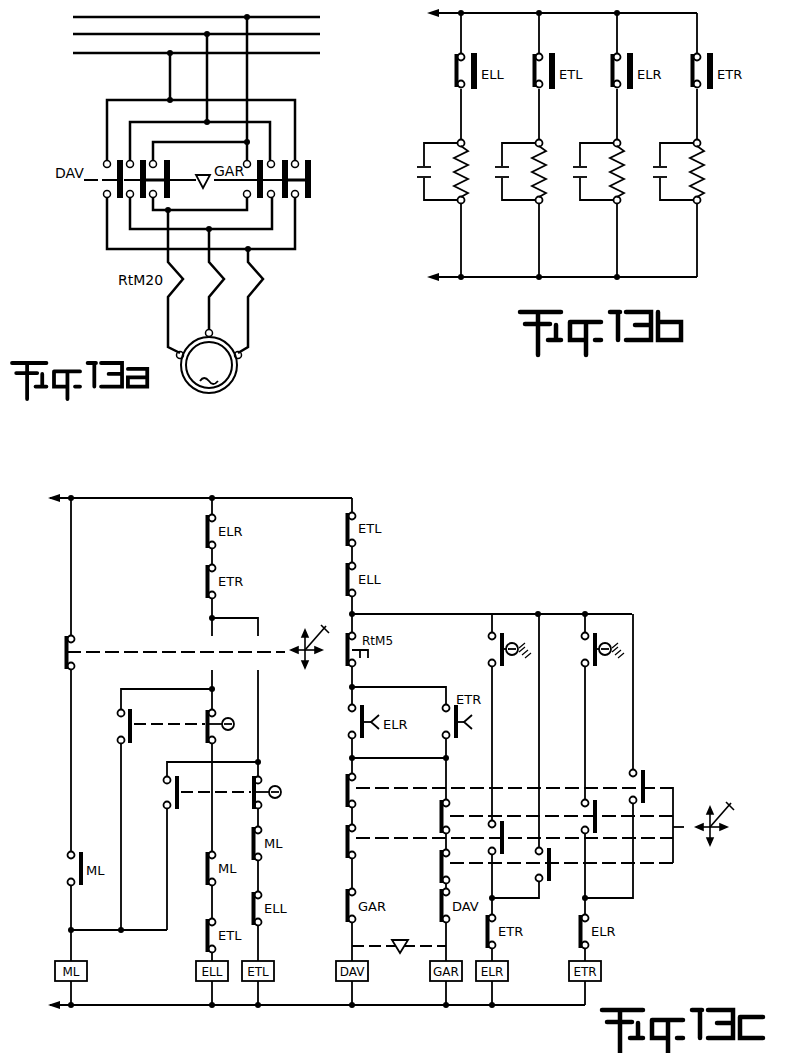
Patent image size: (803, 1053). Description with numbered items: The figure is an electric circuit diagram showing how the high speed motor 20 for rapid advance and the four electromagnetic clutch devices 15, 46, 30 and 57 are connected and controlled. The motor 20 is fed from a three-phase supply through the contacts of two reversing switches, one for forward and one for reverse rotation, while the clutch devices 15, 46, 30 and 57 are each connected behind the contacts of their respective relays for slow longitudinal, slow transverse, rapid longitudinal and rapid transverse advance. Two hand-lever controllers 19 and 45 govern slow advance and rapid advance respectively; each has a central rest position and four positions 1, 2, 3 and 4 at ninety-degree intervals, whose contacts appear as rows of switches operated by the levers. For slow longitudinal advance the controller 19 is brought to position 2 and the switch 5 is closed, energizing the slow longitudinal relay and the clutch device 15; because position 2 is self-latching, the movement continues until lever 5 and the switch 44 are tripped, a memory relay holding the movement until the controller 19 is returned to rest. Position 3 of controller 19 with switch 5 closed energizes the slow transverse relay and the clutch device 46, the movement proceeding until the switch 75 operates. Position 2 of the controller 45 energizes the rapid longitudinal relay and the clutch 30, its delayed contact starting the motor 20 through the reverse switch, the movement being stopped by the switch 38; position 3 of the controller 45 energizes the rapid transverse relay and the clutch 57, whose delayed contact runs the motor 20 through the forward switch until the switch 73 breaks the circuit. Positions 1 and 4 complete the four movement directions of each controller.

In FIG. 13A, the motor 20 is at (209, 362).
In FIG. 13B, the clutch device 15 is at (454, 172).
In FIG. 13B, the clutch device 46 is at (532, 172).
In FIG. 13B, the clutch device 30 is at (610, 172).
In FIG. 13B, the clutch device 57 is at (690, 172).
In FIG. 13C, the switch 5 is at (167, 653).
In FIG. 13C, the controller 19 is at (310, 646).
In FIG. 13C, the switch 44 is at (178, 720).
In FIG. 13C, the switch 75 is at (286, 782).
In FIG. 13C, the switch 38 is at (510, 661).
In FIG. 13C, the switch 73 is at (603, 661).
In FIG. 13C, the controller 45 is at (706, 825).
In FIG. 13C, the controller position 1 is at (503, 789).
In FIG. 13C, the controller position 2 is at (503, 840).
In FIG. 13C, the controller position 3 is at (550, 817).
In FIG. 13C, the controller position 4 is at (550, 866).